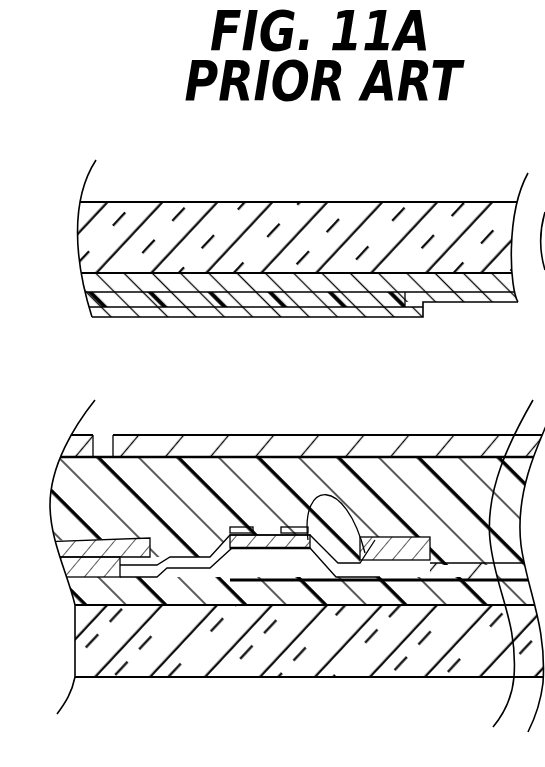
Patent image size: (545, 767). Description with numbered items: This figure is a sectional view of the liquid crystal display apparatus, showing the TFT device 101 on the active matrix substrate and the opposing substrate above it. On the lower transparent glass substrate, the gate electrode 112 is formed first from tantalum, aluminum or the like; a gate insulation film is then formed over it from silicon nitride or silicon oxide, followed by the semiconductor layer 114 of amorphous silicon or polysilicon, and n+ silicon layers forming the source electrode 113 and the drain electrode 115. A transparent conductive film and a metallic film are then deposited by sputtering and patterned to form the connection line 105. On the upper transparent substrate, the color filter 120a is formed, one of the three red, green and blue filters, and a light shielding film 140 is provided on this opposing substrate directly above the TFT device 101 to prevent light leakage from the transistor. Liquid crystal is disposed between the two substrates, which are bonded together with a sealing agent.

The light shielding film 140 is at (289, 283).
The color filter 120a is at (97, 297).
The TFT device 101 is at (259, 424).
The semiconductor layer 114 is at (363, 532).
The source electrode 113 is at (134, 580).
The drain electrode 115 is at (383, 570).
The gate electrode 112 is at (260, 590).
The connection line 105 is at (472, 592).